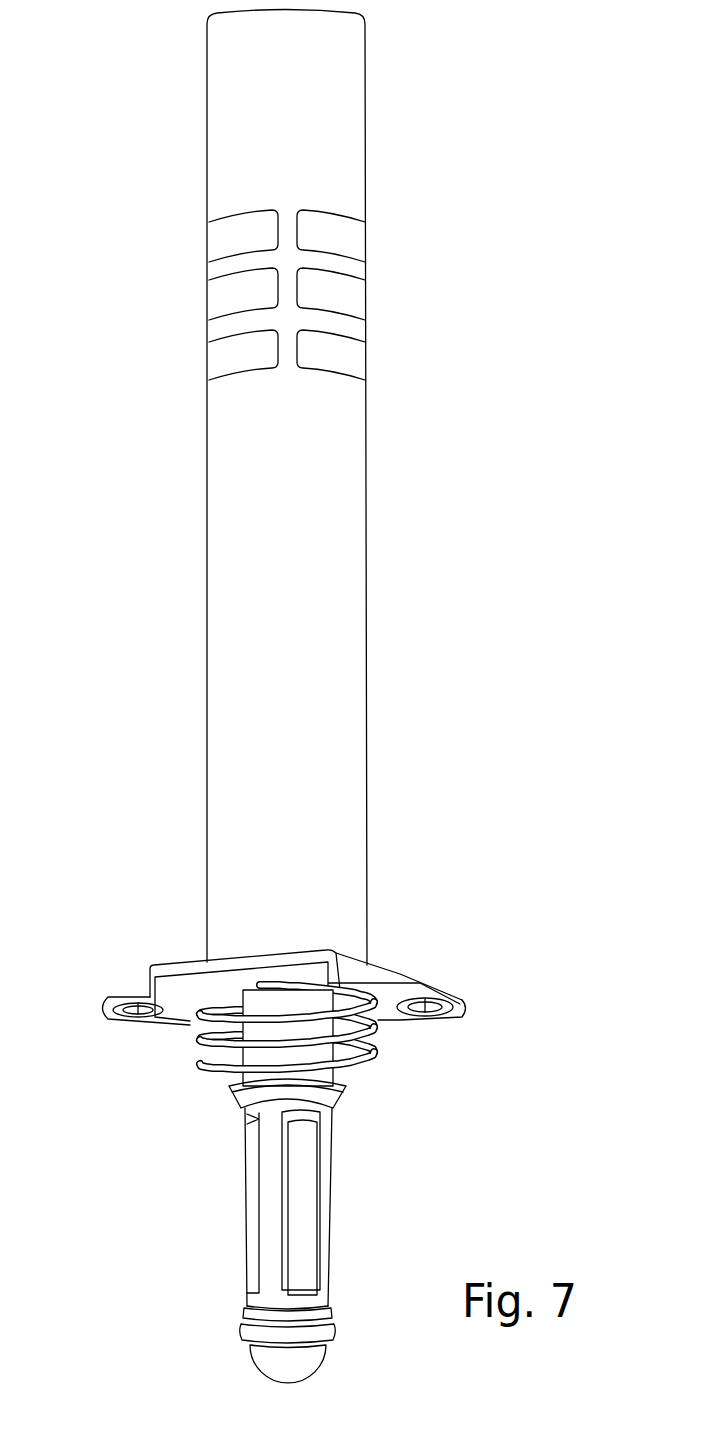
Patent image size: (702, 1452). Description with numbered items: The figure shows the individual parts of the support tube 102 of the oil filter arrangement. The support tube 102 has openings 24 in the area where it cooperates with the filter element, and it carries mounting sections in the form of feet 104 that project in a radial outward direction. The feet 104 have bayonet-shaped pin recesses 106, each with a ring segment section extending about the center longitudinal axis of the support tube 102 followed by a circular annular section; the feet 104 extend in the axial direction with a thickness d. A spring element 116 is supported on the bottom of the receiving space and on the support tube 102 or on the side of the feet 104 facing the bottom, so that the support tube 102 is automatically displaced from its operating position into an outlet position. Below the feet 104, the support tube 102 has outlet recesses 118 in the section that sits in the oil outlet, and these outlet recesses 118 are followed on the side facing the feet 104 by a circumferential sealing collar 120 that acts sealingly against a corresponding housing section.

The openings 24 is at (353, 300).
The support tube 102 is at (347, 431).
The feet 104 is at (131, 965).
The bayonet-shaped pin recesses 106 is at (150, 1012).
The spring element 116 is at (212, 1076).
The outlet recesses 118 is at (256, 1246).
The sealing collar 120 is at (340, 1098).